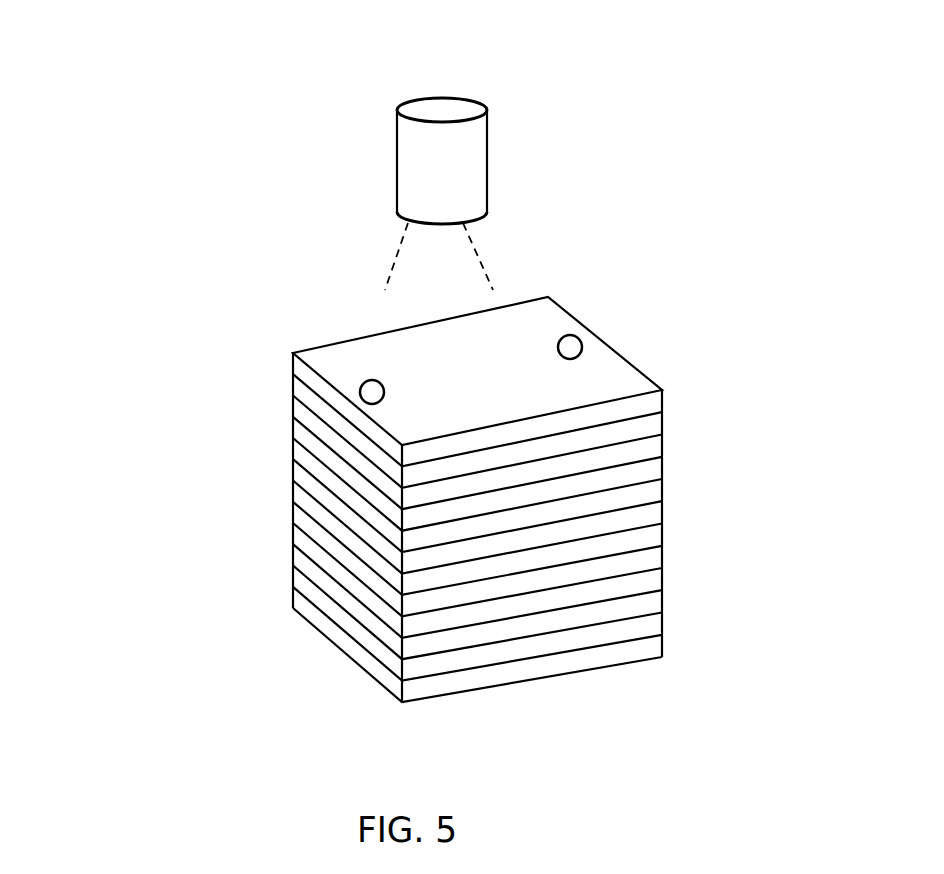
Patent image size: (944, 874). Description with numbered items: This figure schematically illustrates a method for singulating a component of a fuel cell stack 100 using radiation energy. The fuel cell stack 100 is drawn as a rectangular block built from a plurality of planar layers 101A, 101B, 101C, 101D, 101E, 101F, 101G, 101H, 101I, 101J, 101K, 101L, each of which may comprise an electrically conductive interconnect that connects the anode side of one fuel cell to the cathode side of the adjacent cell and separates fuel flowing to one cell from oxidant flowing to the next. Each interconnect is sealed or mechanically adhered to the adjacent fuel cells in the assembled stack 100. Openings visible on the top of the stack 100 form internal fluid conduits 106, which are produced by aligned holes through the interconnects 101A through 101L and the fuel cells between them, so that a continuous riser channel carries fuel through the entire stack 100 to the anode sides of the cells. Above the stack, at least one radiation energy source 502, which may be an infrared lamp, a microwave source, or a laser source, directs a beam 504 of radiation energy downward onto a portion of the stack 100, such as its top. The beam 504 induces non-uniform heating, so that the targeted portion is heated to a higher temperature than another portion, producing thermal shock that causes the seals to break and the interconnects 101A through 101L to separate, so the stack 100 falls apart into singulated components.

The fuel cell stack 100 is at (193, 345).
The layer 101A is at (293, 365).
The layer 101B is at (293, 387).
The layer 101C is at (293, 410).
The layer 101D is at (293, 433).
The layer 101E is at (293, 455).
The layer 101F is at (293, 475).
The layer 101G is at (293, 493).
The layer 101H is at (293, 510).
The layer 101I is at (293, 533).
The layer 101J is at (293, 556).
The layer 101K is at (293, 578).
The layer 101L is at (293, 600).
The conduit 106 is at (370, 387).
The radiation energy source 502 is at (487, 146).
The beam 504 is at (476, 250).